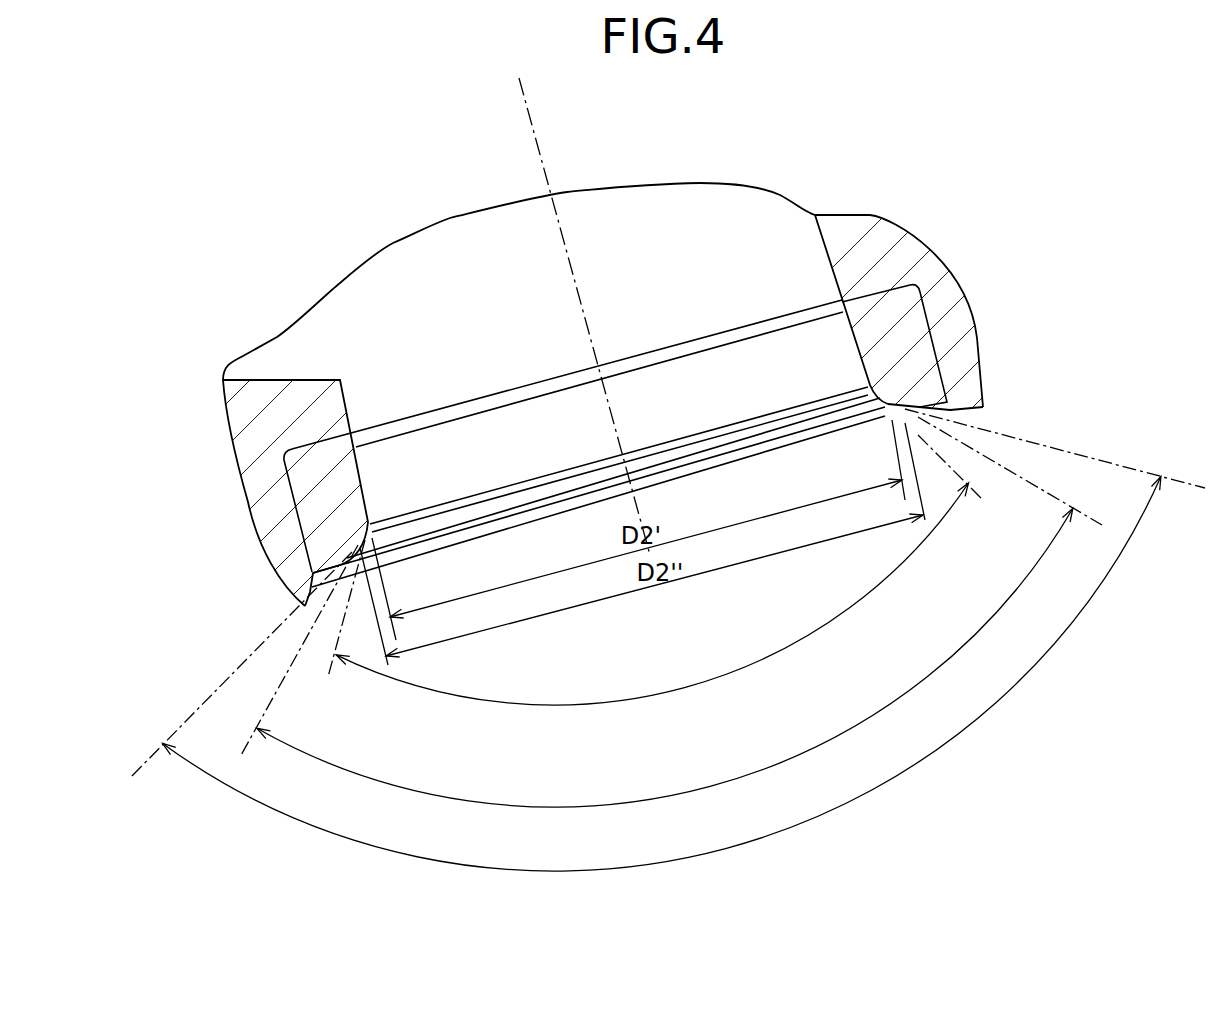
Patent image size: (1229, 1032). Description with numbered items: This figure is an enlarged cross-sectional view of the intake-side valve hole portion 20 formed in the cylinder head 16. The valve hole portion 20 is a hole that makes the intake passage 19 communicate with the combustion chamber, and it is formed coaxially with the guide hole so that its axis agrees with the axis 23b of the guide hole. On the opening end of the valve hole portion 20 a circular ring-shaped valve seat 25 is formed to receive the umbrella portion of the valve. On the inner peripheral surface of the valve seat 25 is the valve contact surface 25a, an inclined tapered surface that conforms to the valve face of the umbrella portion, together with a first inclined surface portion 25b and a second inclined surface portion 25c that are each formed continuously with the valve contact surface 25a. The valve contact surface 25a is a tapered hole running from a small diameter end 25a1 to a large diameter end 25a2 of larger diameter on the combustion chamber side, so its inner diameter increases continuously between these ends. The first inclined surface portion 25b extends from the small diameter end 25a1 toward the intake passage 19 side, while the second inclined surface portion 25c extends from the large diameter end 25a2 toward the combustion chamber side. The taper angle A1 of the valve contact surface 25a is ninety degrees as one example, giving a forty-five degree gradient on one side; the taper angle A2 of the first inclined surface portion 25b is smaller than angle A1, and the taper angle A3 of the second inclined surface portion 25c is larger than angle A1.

The cylinder head 16 is at (230, 456).
The intake passage 19 is at (457, 238).
The intake-side valve hole portion 20 is at (418, 358).
The axis of the guide hole 23b is at (540, 155).
The valve seat 25 is at (888, 318).
The valve contact surface 25a is at (886, 398).
The first inclined surface portion 25b is at (876, 390).
The second inclined surface portion 25c is at (905, 408).
The small diameter end 25a1 is at (372, 535).
The large diameter end 25a2 is at (363, 545).
The angle of the taper of the valve contact surface A1 is at (671, 612).
The angle of the taper of the first inclined surface portion A2 is at (655, 570).
The angle of the taper of the second inclined surface portion A3 is at (667, 640).